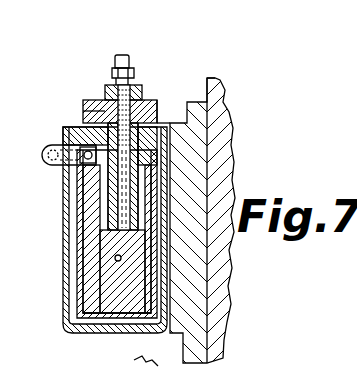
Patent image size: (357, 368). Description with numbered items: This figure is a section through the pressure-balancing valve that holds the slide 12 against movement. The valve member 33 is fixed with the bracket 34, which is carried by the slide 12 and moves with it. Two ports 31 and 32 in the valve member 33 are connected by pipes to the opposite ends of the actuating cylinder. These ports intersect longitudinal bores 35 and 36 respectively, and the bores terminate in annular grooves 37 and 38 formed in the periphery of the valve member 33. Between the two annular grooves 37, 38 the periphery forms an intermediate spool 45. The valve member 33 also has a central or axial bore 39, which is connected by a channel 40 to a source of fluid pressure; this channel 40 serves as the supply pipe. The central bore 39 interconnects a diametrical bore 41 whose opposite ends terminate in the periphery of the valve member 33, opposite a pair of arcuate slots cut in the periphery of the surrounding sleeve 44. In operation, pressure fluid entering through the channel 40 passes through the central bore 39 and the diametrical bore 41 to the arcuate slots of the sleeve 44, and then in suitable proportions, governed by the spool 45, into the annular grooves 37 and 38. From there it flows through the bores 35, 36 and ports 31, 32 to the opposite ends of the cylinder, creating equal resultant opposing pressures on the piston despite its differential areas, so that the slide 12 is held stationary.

The slide 12 is at (216, 115).
The port 31 is at (85, 104).
The port 32 is at (146, 101).
The valve member 33 is at (158, 105).
The bracket 34 is at (203, 100).
The longitudinal bore 35 is at (85, 117).
The longitudinal bore 36 is at (158, 121).
The annular groove 37 is at (97, 225).
The annular groove 38 is at (68, 197).
The central bore 39 is at (142, 88).
The channel 40 is at (122, 54).
The diametrical bore 41 is at (82, 212).
The sleeve 44 is at (78, 142).
The intermediate spool 45 is at (113, 300).